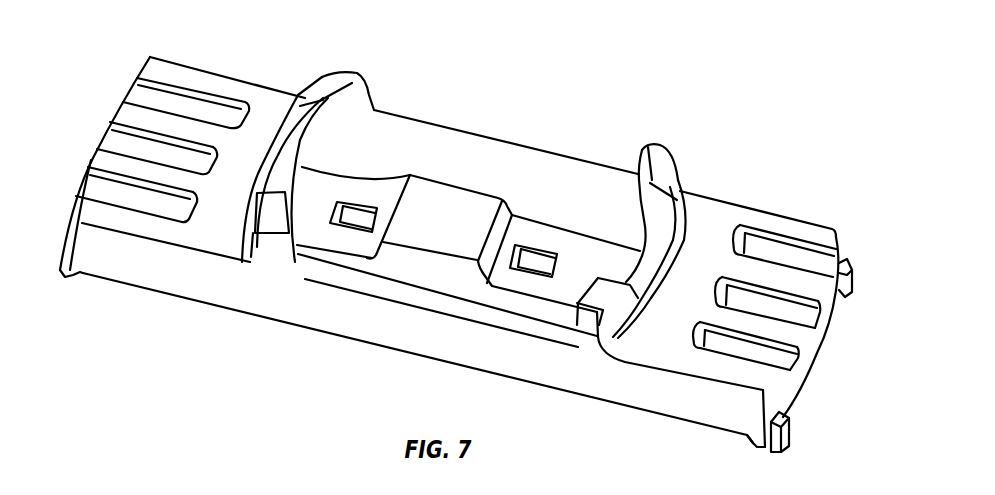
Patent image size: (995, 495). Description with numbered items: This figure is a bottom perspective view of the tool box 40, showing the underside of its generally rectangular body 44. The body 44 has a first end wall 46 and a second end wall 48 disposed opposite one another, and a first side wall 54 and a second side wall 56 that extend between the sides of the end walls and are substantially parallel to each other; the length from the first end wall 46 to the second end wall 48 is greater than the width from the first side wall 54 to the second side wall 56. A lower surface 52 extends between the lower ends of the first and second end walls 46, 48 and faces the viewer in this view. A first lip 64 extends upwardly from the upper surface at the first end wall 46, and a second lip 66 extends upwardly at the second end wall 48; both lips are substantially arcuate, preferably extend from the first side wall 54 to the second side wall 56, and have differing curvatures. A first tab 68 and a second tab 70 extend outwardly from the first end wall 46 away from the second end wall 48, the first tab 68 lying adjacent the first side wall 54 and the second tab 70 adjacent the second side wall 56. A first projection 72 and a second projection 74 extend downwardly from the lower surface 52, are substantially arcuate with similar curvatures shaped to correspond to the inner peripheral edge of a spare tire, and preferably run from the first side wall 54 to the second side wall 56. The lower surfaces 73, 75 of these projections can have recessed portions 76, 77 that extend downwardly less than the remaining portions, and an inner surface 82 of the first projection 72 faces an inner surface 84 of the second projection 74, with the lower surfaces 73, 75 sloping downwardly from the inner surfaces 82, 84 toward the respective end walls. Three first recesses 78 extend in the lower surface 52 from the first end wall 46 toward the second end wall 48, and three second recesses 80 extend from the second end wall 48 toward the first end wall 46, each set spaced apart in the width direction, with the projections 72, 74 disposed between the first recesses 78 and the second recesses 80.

The tool box 40 is at (493, 137).
The body 44 is at (377, 347).
The first end wall 46 is at (806, 357).
The second end wall 48 is at (70, 226).
The lower surface 52 is at (453, 143).
The first side wall 54 is at (553, 153).
The second side wall 56 is at (473, 353).
The first lip 64 is at (757, 448).
The second lip 66 is at (66, 278).
The first tab 68 is at (849, 280).
The second tab 70 is at (789, 435).
The first projection 72 is at (663, 163).
The lower surface of the first projection 73 is at (577, 316).
The second projection 74 is at (372, 92).
The lower surface of the second projection 75 is at (277, 222).
The recessed portion 76 is at (663, 227).
The recessed portion 77 is at (300, 118).
The first recesses 78 is at (787, 233).
The second recesses 80 is at (173, 79).
The inner surface of the first projection 82 is at (640, 170).
The inner surface of the second projection 84 is at (323, 137).